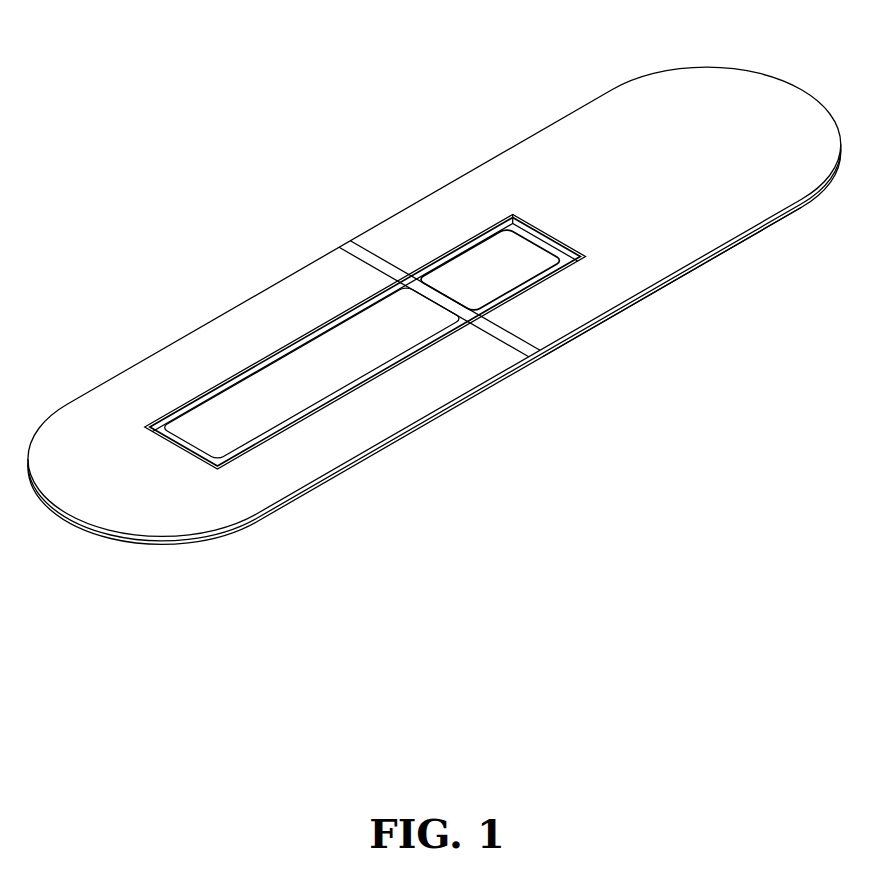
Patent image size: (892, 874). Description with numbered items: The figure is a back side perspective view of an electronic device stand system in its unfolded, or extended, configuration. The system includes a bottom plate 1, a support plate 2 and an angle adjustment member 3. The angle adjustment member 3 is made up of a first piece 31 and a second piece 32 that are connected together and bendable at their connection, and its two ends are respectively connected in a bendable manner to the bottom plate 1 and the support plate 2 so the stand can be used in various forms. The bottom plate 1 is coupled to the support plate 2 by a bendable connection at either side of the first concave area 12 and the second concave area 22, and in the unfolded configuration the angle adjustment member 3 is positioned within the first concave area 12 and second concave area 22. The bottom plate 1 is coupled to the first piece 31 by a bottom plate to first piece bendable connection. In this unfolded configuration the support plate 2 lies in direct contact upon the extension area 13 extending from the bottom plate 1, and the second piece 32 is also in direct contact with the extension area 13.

The bottom plate 1 is at (363, 426).
The support plate 2 is at (621, 112).
The first concave area 12 is at (273, 353).
The extension area 13 is at (570, 341).
The second concave area 22 is at (490, 232).
The angle adjustment member 3 is at (370, 93).
The first piece 31 is at (367, 352).
The second piece 32 is at (472, 282).